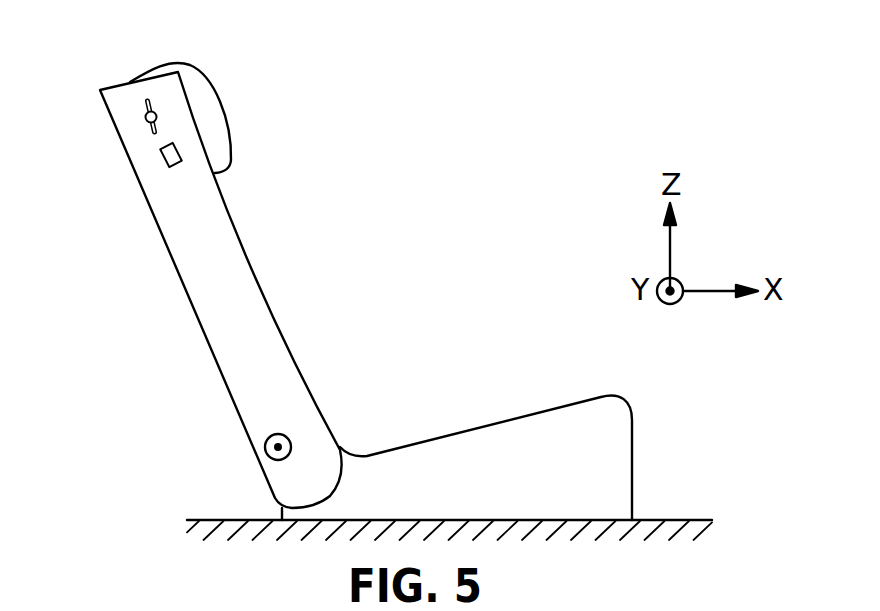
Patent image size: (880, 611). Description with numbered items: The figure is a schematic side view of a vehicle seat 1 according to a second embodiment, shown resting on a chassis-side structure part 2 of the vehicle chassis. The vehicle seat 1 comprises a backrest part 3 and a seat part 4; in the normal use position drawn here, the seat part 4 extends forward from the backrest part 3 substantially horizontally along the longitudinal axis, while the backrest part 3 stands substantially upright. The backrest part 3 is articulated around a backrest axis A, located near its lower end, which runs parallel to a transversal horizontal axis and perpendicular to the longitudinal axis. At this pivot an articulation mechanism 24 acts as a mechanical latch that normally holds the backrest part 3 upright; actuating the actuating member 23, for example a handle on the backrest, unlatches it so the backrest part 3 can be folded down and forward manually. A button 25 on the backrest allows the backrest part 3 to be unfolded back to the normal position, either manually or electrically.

The vehicle seat 1 is at (478, 88).
The chassis-side structure part 2 is at (687, 520).
The backrest part 3 is at (233, 268).
The seat part 4 is at (527, 425).
The actuating member 23 is at (145, 117).
The articulation mechanism 24 is at (288, 438).
The button 25 is at (160, 160).
The backrest axis A is at (265, 447).